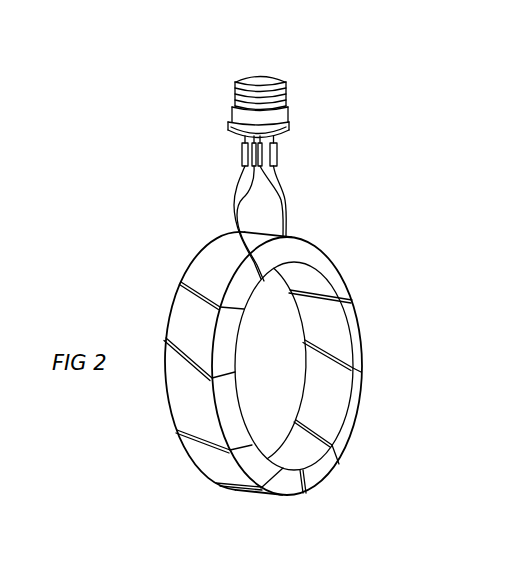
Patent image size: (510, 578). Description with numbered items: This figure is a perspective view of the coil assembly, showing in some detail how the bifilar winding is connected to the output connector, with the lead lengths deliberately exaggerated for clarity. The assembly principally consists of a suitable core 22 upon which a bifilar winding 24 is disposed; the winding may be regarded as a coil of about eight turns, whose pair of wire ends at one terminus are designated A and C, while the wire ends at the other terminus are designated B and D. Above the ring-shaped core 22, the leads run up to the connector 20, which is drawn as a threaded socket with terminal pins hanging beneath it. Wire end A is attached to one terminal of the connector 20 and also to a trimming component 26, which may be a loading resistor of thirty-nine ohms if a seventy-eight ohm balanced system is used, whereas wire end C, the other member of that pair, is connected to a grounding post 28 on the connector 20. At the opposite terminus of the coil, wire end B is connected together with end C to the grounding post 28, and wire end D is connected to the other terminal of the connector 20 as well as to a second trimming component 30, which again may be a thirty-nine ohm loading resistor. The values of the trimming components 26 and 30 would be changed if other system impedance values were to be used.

The connector 20 is at (263, 77).
The core 22 is at (333, 263).
The bifilar winding 24 is at (362, 368).
The trimming component 26 is at (240, 152).
The grounding post 28 is at (283, 124).
The trimming component 30 is at (282, 157).
The wire end A is at (242, 183).
The wire end B is at (280, 198).
The wire end C is at (240, 200).
The wire end D is at (280, 184).